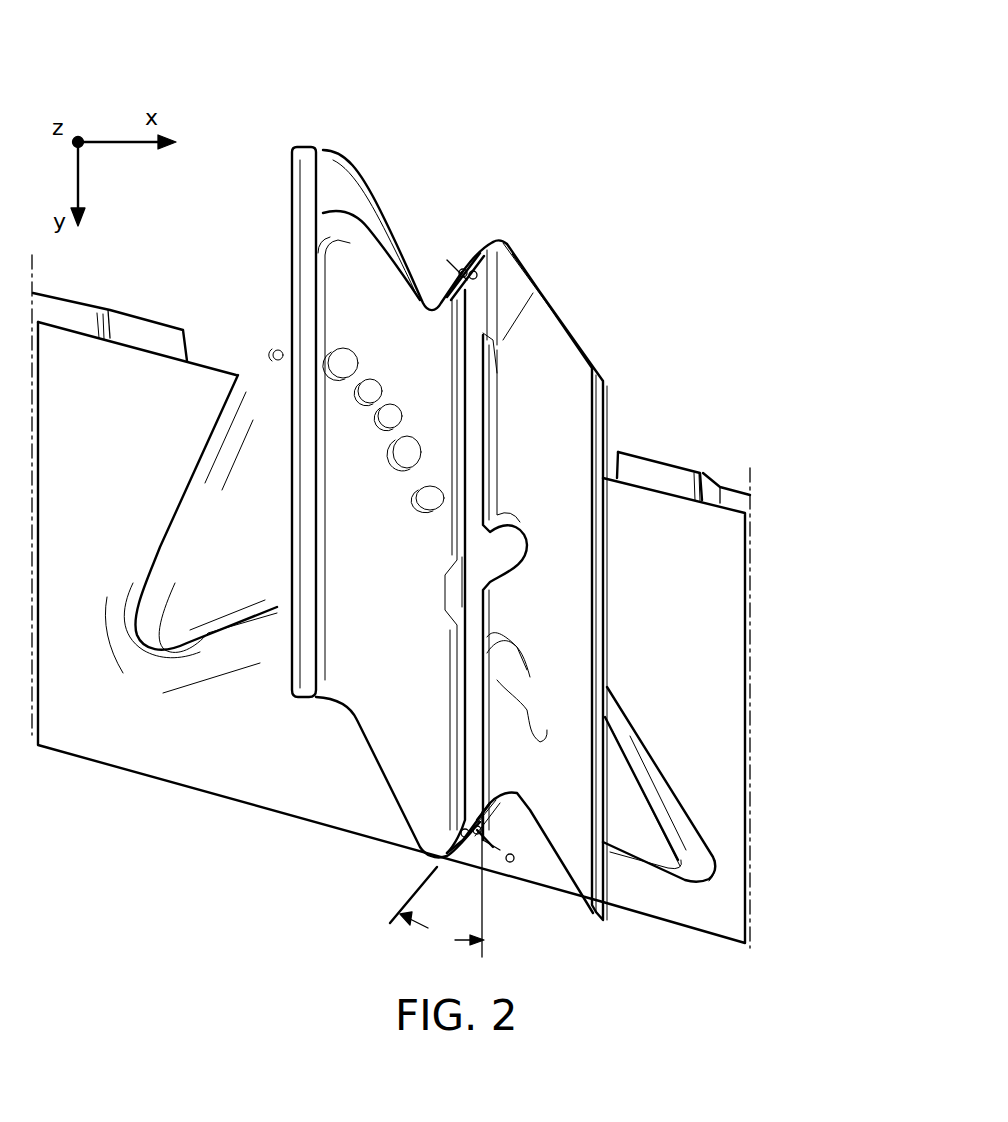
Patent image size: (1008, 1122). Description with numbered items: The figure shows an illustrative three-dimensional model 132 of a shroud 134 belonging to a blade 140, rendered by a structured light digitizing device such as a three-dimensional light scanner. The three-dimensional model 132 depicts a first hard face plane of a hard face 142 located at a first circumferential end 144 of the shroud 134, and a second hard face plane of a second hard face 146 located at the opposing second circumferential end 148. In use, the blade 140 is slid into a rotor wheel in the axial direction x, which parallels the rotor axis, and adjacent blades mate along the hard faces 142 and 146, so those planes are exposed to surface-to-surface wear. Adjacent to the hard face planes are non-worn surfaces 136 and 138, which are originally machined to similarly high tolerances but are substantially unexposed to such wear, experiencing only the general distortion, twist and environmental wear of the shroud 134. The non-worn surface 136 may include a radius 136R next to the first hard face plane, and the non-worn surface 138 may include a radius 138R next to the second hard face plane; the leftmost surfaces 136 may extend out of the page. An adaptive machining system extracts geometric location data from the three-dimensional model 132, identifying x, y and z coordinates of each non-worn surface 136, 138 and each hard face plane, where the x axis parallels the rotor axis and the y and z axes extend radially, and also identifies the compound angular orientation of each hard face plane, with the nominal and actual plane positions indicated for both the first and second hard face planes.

The 3D model 132 is at (446, 487).
The shroud 134 is at (545, 447).
The non-worn surface 136 is at (310, 147).
The radius 136R is at (323, 213).
The non-worn surface 138 is at (380, 763).
The radius 138R is at (515, 790).
The blade 140 is at (227, 523).
The hard face 142 is at (472, 284).
The first circumferential end 144 is at (505, 236).
The second hard face 146 is at (483, 833).
The second circumferential end 148 is at (422, 864).